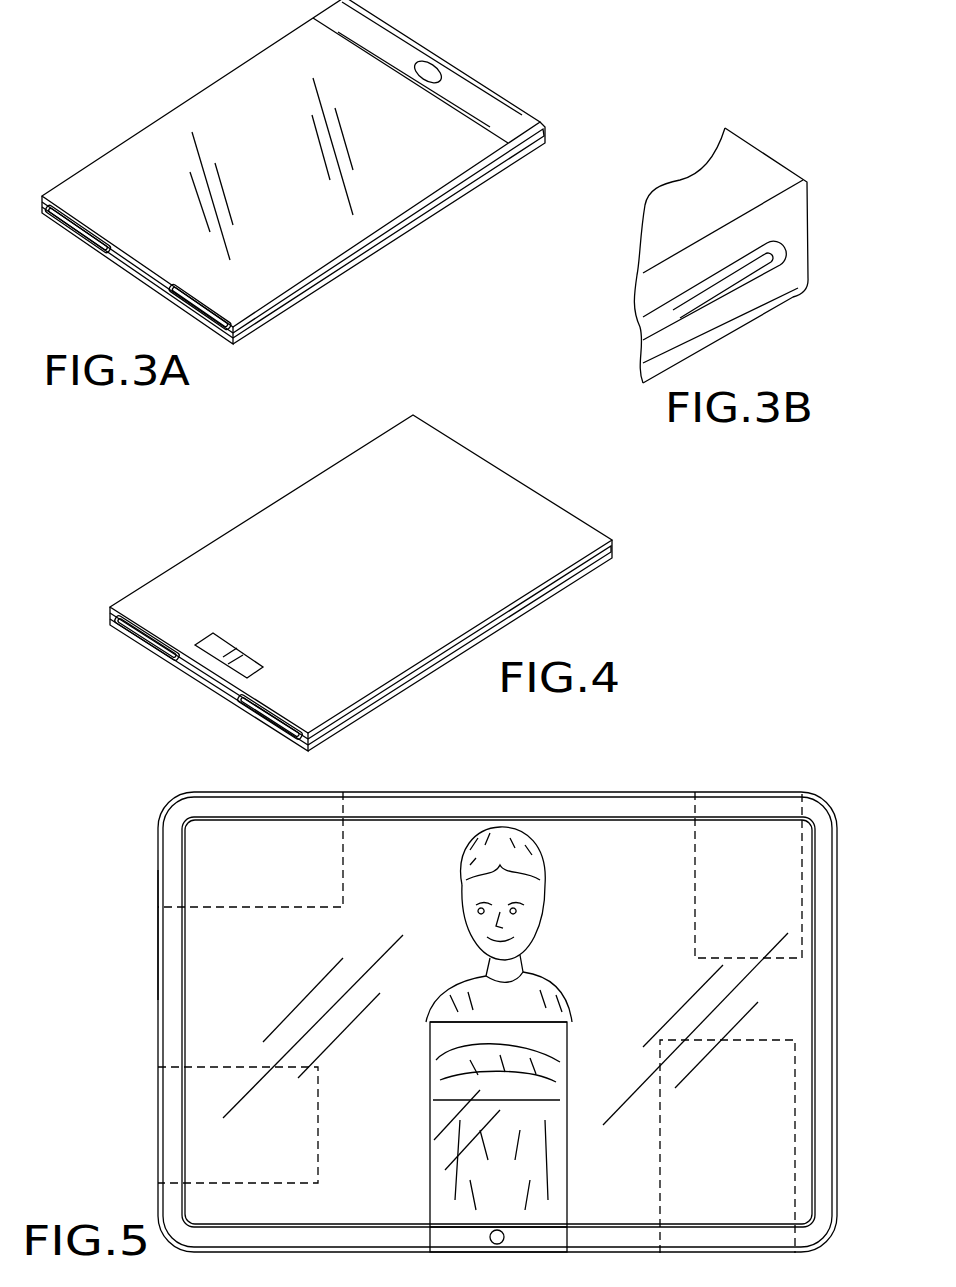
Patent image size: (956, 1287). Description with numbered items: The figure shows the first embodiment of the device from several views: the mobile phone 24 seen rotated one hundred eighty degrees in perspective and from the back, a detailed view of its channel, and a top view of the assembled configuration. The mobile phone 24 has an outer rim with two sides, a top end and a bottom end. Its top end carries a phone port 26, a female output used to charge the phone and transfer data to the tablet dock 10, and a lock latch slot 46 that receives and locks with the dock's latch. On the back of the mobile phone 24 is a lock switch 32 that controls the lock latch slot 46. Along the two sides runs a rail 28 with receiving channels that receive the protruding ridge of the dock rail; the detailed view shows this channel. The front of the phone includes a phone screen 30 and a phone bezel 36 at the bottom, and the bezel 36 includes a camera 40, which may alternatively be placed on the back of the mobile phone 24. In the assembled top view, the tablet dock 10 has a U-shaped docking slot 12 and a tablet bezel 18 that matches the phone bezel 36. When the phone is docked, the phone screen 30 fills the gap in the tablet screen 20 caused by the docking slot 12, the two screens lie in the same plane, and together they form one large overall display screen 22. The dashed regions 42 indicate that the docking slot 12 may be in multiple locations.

In FIG. 5, the tablet dock 10 is at (792, 760).
In FIG. 5, the docking slot 12 is at (567, 1118).
In FIG. 5, the tablet bezel 18 is at (160, 881).
In FIG. 5, the tablet screen 20 is at (630, 917).
In FIG. 5, the overall display screen 22 is at (453, 885).
In FIG. 3A, the mobile phone 24 is at (516, 54).
In FIG. 5, the mobile phone 24 is at (577, 1140).
In FIG. 3A, the phone port 26 is at (186, 303).
In FIG. 4, the phone port 26 is at (145, 655).
In FIG. 3A, the rail 28 is at (350, 268).
In FIG. 3B, the rail 28 is at (720, 303).
In FIG. 4, the rail 28 is at (393, 692).
In FIG. 3A, the phone screen 30 is at (243, 160).
In FIG. 5, the phone screen 30 is at (430, 1143).
In FIG. 4, the lock switch 32 is at (220, 650).
In FIG. 3A, the phone bezel 36 is at (533, 120).
In FIG. 3B, the phone bezel 36 is at (738, 163).
In FIG. 5, the phone bezel 36 is at (563, 1237).
In FIG. 3A, the camera 40 is at (426, 66).
In FIG. 5, the camera 40 is at (495, 1230).
In FIG. 5, the sensor region 42 is at (687, 835).
In FIG. 3A, the lock latch slot 46 is at (93, 242).
In FIG. 4, the lock latch slot 46 is at (253, 715).